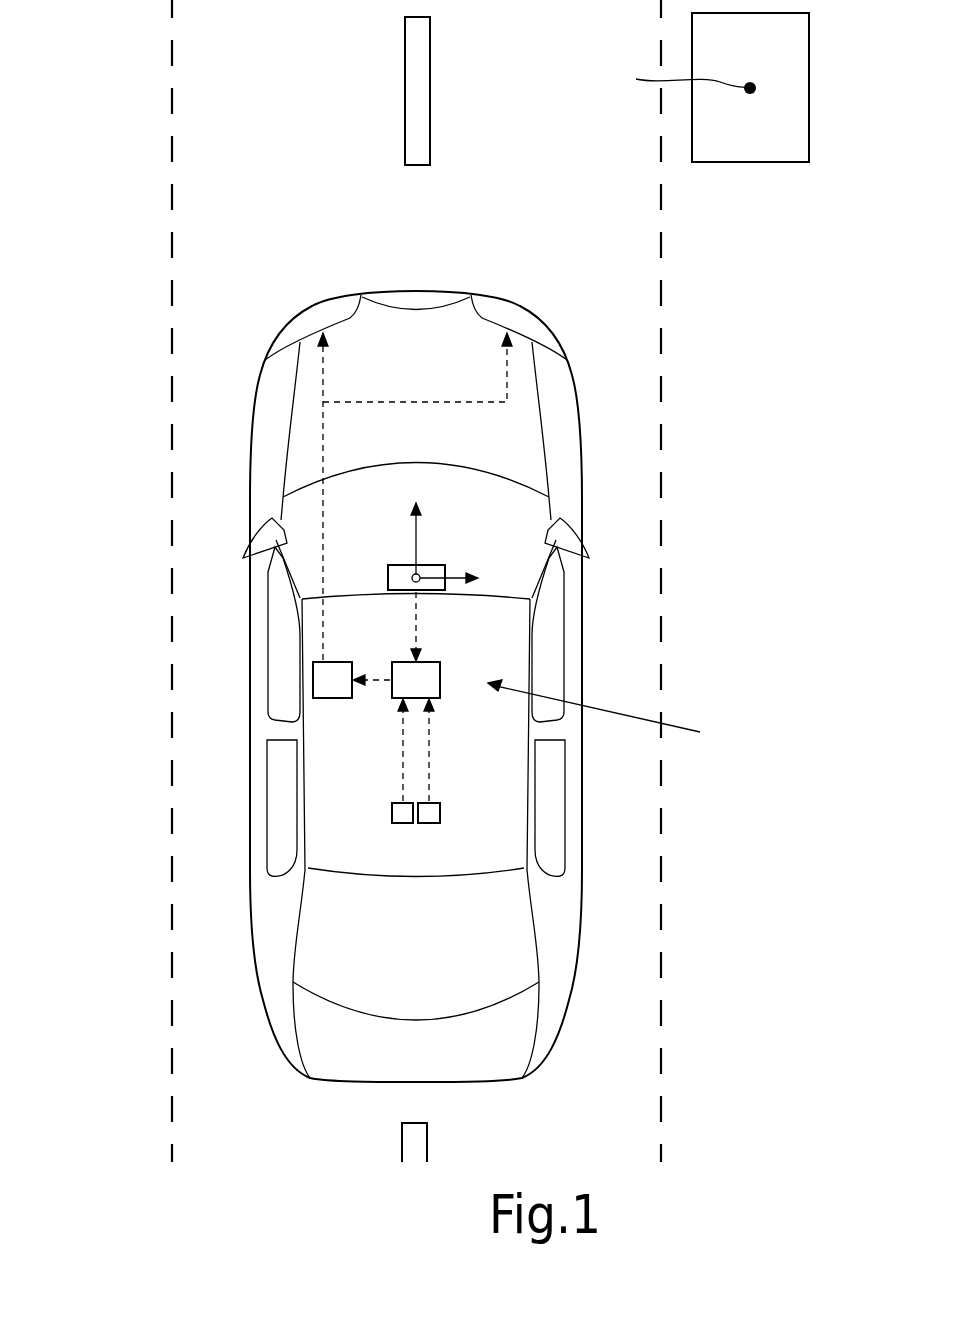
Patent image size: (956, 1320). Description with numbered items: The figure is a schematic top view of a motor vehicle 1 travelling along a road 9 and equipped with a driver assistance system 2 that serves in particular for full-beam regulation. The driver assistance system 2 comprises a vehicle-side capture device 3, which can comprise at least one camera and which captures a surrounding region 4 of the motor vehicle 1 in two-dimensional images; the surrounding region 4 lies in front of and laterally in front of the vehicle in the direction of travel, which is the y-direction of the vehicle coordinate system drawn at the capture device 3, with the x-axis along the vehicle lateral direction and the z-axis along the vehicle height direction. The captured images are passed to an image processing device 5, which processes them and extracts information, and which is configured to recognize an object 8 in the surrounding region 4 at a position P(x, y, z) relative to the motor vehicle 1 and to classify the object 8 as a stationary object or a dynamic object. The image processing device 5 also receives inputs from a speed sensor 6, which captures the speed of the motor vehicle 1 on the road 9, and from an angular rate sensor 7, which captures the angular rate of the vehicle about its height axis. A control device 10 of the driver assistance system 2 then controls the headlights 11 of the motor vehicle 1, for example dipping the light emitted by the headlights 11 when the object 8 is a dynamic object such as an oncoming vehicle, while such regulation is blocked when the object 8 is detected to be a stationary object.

The motor vehicle 1 is at (349, 1080).
The driver assistance system 2 is at (609, 719).
The capture device 3 is at (437, 592).
The surrounding region 4 is at (79, 474).
The image processing device 5 is at (438, 698).
The speed sensor 6 is at (440, 813).
The angular rate sensor 7 is at (392, 812).
The object 8 is at (755, 163).
The road 9 is at (195, 168).
The control device 10 is at (335, 698).
The headlights 11 is at (300, 313).